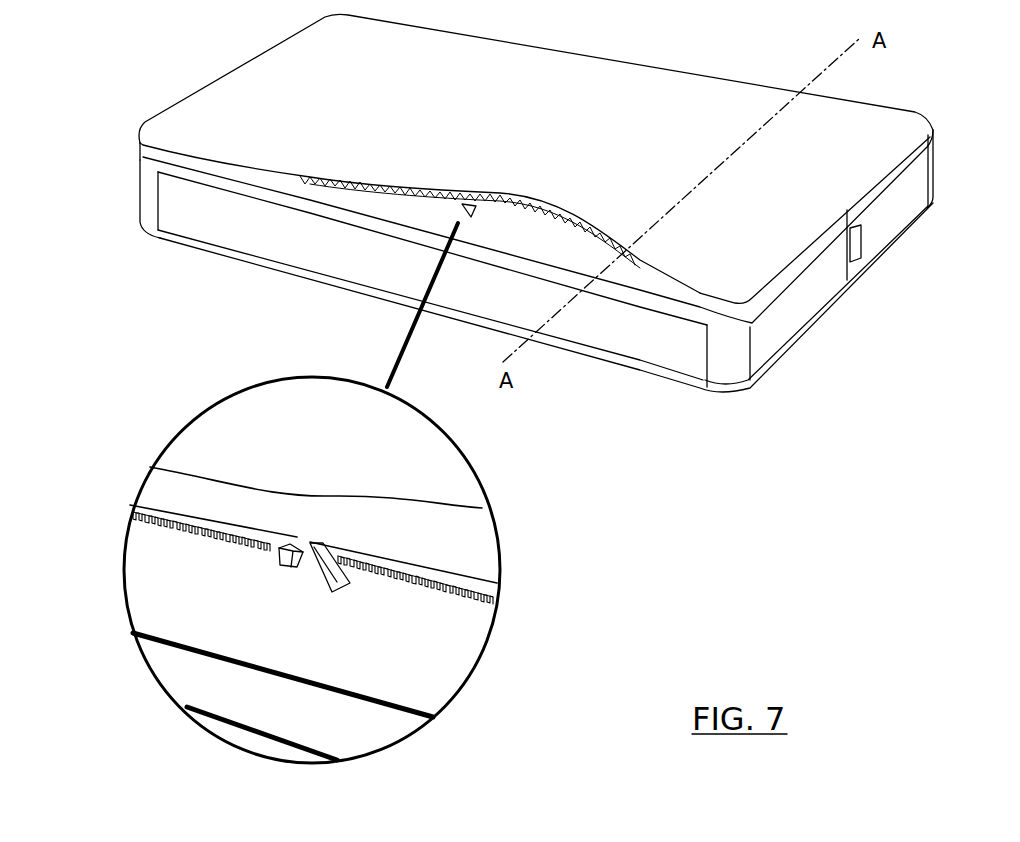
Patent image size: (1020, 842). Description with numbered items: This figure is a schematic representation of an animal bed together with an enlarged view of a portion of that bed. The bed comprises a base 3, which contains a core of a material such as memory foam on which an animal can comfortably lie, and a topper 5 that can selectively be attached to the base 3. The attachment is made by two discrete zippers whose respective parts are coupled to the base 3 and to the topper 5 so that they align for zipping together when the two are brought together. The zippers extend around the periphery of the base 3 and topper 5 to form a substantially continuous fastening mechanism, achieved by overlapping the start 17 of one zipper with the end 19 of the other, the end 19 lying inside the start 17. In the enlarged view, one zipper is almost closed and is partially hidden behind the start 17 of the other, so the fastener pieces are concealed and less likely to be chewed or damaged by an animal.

The base 3 is at (190, 262).
The topper 5 is at (197, 112).
The start of one zipper 17 is at (257, 558).
The end of the other zipper 19 is at (317, 575).